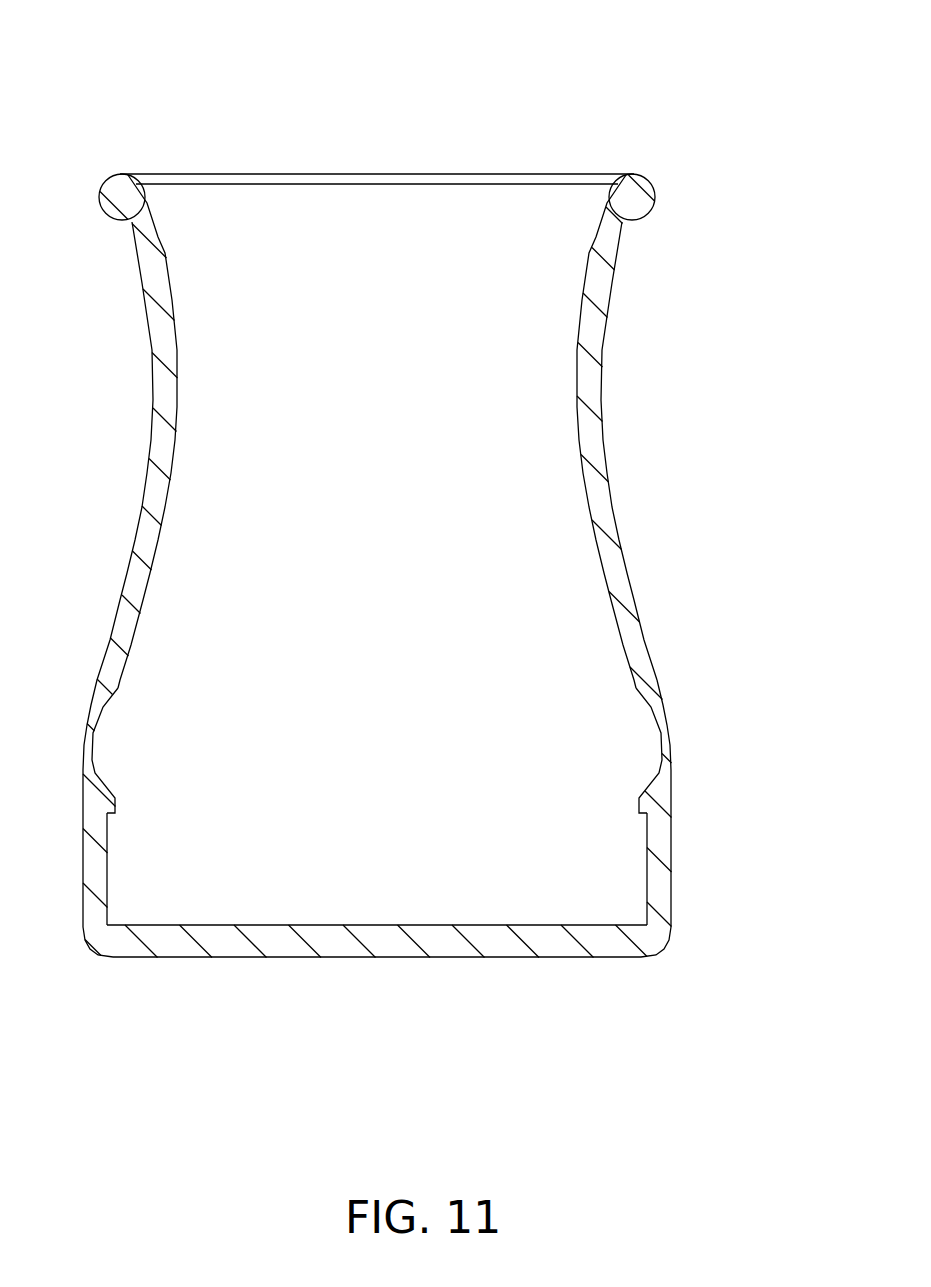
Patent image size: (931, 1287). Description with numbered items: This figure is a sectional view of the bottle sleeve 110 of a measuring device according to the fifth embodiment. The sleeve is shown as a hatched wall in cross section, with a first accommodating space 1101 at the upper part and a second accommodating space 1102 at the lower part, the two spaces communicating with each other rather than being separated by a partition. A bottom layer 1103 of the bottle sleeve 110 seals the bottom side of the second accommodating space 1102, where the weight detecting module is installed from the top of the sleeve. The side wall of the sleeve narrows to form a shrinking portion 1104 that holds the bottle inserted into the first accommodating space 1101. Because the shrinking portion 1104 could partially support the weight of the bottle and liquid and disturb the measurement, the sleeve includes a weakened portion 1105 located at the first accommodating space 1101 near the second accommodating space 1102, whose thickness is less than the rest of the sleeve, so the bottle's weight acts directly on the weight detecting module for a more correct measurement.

The bottle sleeve 110 is at (439, 528).
The first accommodating space 1101 is at (375, 218).
The second accommodating space 1102 is at (282, 910).
The bottom layer 1103 is at (450, 948).
The shrinking portion 1104 is at (592, 438).
The weakened portion 1105 is at (658, 722).